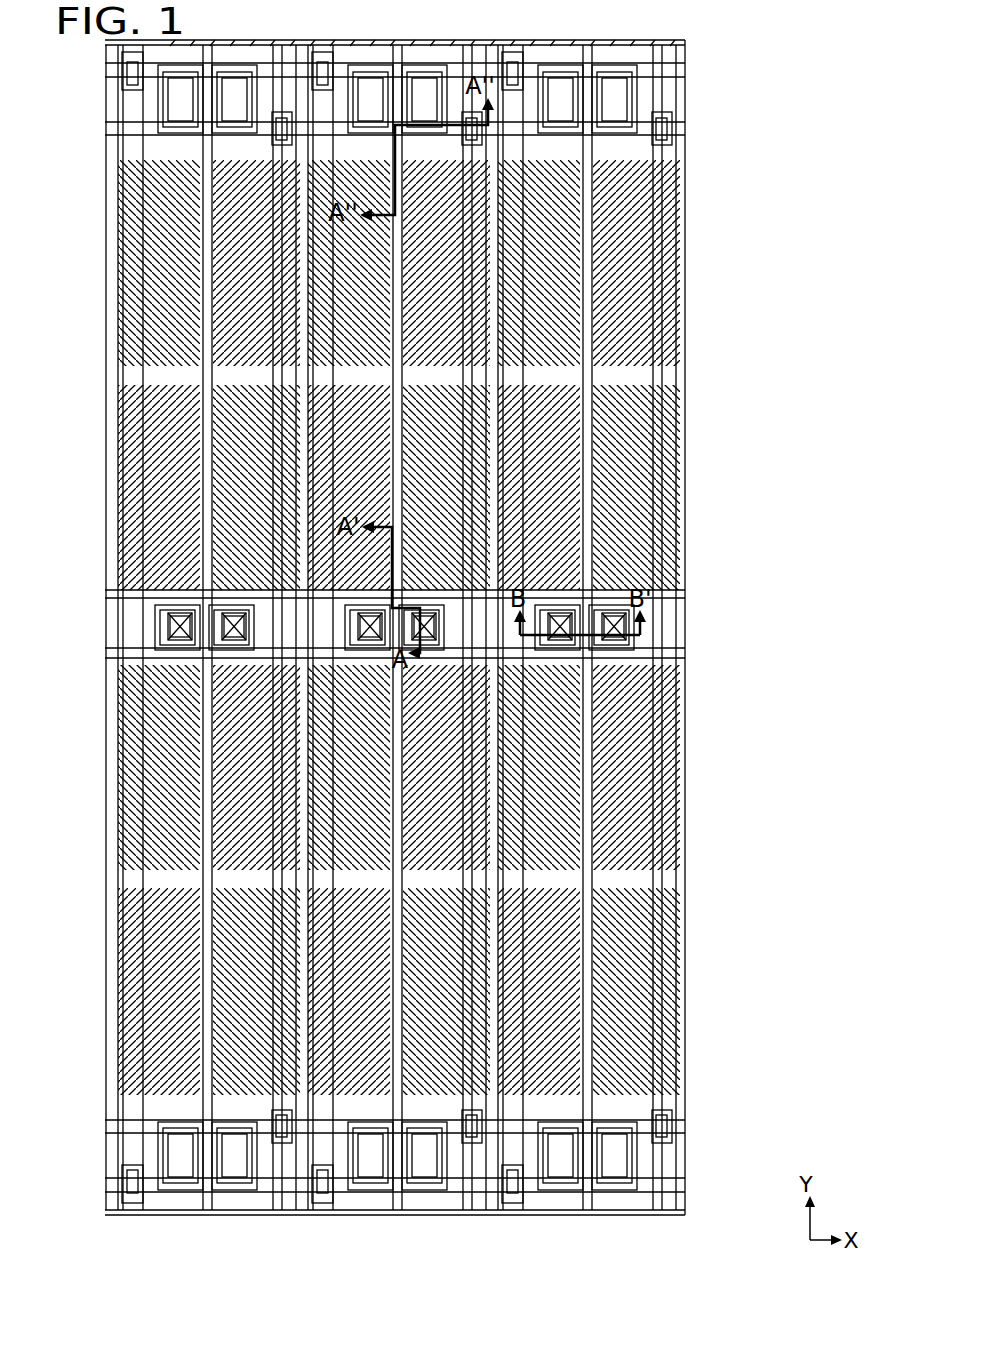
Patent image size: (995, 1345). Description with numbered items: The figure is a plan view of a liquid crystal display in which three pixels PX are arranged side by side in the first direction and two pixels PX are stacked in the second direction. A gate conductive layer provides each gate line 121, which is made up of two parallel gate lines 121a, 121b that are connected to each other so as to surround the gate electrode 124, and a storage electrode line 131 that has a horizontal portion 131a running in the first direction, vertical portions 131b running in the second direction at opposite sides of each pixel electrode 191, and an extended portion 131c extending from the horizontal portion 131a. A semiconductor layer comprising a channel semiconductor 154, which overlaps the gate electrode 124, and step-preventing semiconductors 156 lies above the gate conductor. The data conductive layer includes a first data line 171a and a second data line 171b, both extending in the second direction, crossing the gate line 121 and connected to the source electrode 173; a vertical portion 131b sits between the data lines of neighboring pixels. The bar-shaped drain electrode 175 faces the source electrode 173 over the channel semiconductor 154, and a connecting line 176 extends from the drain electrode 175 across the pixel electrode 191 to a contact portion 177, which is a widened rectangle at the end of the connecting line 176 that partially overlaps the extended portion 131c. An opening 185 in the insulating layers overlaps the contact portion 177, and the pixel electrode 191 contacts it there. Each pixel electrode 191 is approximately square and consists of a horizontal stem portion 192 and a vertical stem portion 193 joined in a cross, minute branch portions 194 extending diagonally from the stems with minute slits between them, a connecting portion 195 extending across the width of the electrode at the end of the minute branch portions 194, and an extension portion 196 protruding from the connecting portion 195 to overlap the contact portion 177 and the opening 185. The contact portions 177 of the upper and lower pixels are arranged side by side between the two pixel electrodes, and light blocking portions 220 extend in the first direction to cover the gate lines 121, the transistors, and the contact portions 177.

The gate line 121 is at (770, 68).
The first gate line 121a is at (690, 72).
The second gate line 121b is at (690, 132).
The gate electrode 124 is at (128, 1130).
The storage electrode line 131 is at (770, 595).
The horizontal portion 131a is at (668, 630).
The vertical portion 131b is at (680, 598).
The extended portion 131c is at (620, 655).
The channel semiconductor 154 is at (200, 1180).
The step-preventing semiconductor 156 is at (130, 1200).
The first data line 171a is at (272, 878).
The second data line 171b is at (137, 880).
The source electrode 173 is at (190, 1175).
The drain electrode 175 is at (175, 1133).
The connecting line 176 is at (208, 360).
The contact portion 177 is at (215, 635).
The opening 185 is at (233, 612).
The pixel electrode 191 is at (118, 248).
The horizontal stem portion 192 is at (158, 375).
The vertical stem portion 193 is at (198, 305).
The minute branch portion 194 is at (125, 438).
The connecting portion 195 is at (225, 597).
The extension portion 196 is at (182, 627).
The light blocking portion 220 is at (112, 150).
The pixel PX is at (113, 195).